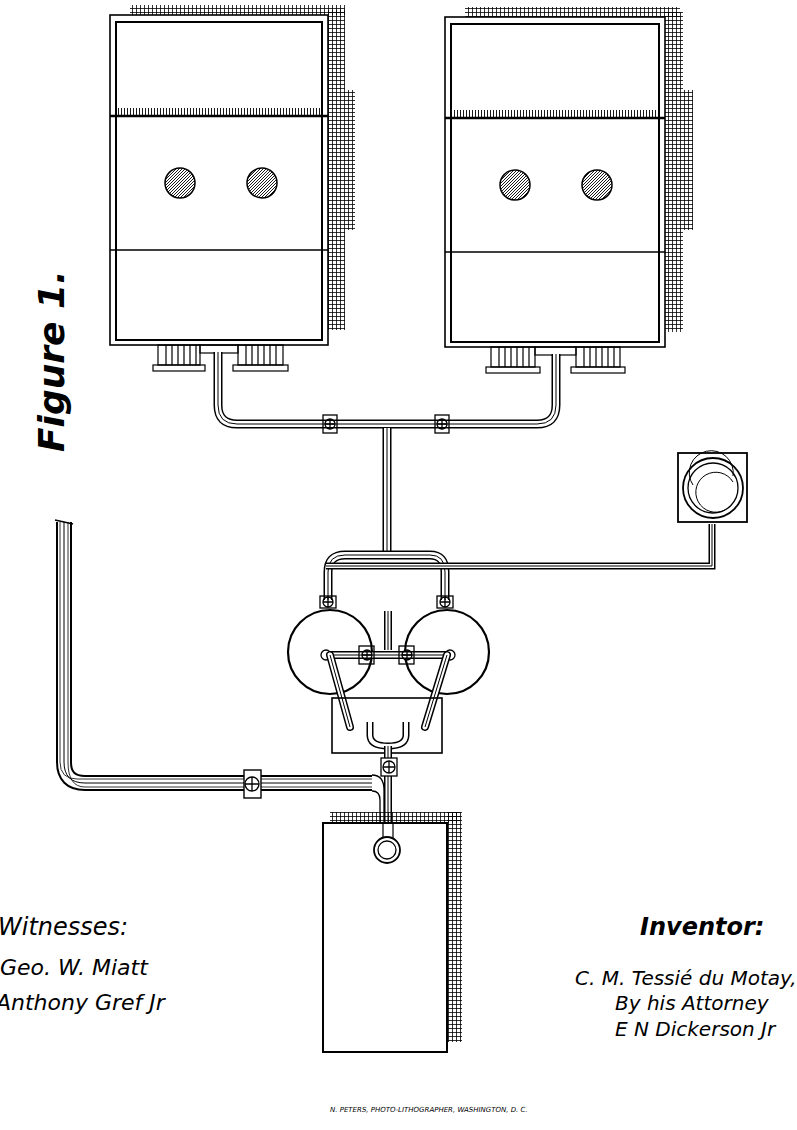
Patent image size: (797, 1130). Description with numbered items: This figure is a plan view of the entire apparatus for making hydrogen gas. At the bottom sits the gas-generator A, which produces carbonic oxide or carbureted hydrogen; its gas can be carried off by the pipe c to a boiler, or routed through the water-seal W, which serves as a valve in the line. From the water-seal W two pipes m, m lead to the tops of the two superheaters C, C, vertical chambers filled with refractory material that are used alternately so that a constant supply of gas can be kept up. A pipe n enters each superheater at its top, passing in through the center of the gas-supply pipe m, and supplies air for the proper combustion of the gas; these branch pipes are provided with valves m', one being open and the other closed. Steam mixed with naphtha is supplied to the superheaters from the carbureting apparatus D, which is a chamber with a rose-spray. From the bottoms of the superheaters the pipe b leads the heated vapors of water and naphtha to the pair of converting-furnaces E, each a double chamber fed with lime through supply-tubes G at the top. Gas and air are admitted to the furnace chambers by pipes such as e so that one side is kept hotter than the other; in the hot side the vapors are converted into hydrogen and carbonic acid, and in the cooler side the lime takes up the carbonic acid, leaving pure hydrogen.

The converting-furnace E is at (401, 189).
The supply-tube G is at (373, 184).
The pipe b is at (381, 480).
The carbureting apparatus D is at (536, 497).
The superheater C is at (385, 652).
The pipe m is at (379, 691).
The valve m' is at (388, 625).
The pipe n is at (373, 628).
The water-seal W is at (372, 725).
The pipe e is at (397, 763).
The pipe c is at (219, 671).
The gas-generator A is at (392, 932).